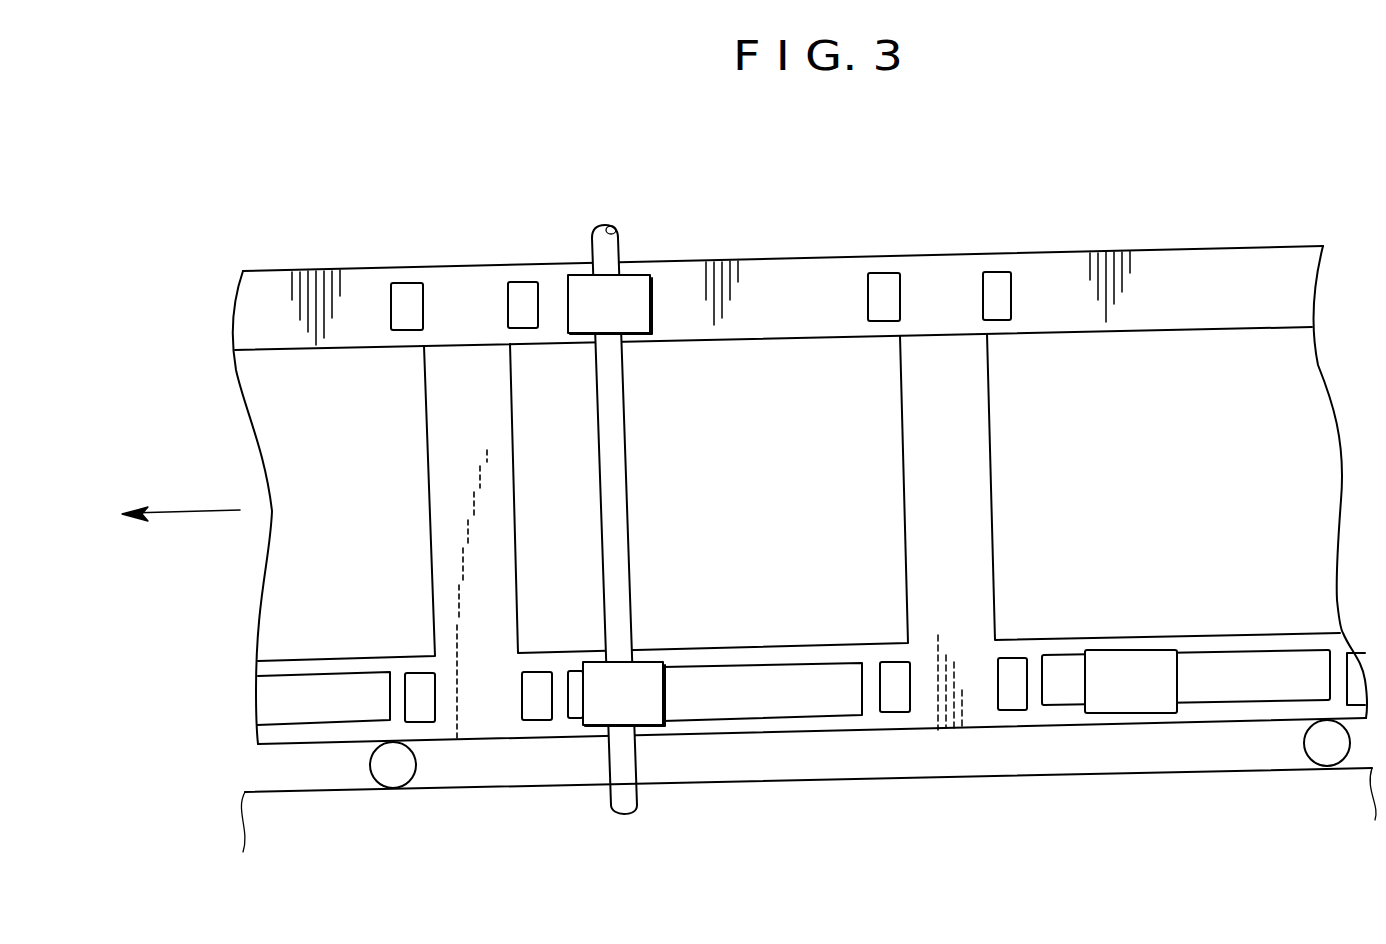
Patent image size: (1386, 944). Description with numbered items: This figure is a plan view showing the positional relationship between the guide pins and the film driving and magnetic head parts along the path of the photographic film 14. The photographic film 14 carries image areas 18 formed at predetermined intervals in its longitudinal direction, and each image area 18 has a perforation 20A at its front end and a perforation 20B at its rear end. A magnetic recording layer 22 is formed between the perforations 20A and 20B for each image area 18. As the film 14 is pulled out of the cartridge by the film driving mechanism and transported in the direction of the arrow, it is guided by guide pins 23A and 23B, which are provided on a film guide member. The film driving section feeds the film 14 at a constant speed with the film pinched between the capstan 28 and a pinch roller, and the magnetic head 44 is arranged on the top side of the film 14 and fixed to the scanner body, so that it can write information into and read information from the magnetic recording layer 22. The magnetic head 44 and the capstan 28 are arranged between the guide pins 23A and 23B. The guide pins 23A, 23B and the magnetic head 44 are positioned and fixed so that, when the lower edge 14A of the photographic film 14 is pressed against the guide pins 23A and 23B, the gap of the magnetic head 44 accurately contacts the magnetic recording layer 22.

The photographic film 14 is at (975, 252).
The lower edge 14A is at (973, 733).
The image area 18 is at (798, 365).
The perforation 20A is at (537, 712).
The perforation 20B is at (898, 703).
The magnetic recording layer 22 is at (777, 703).
The guide pin 23A is at (1327, 753).
The guide pin 23B is at (393, 775).
The capstan 28 is at (633, 290).
The magnetic head 44 is at (1140, 698).